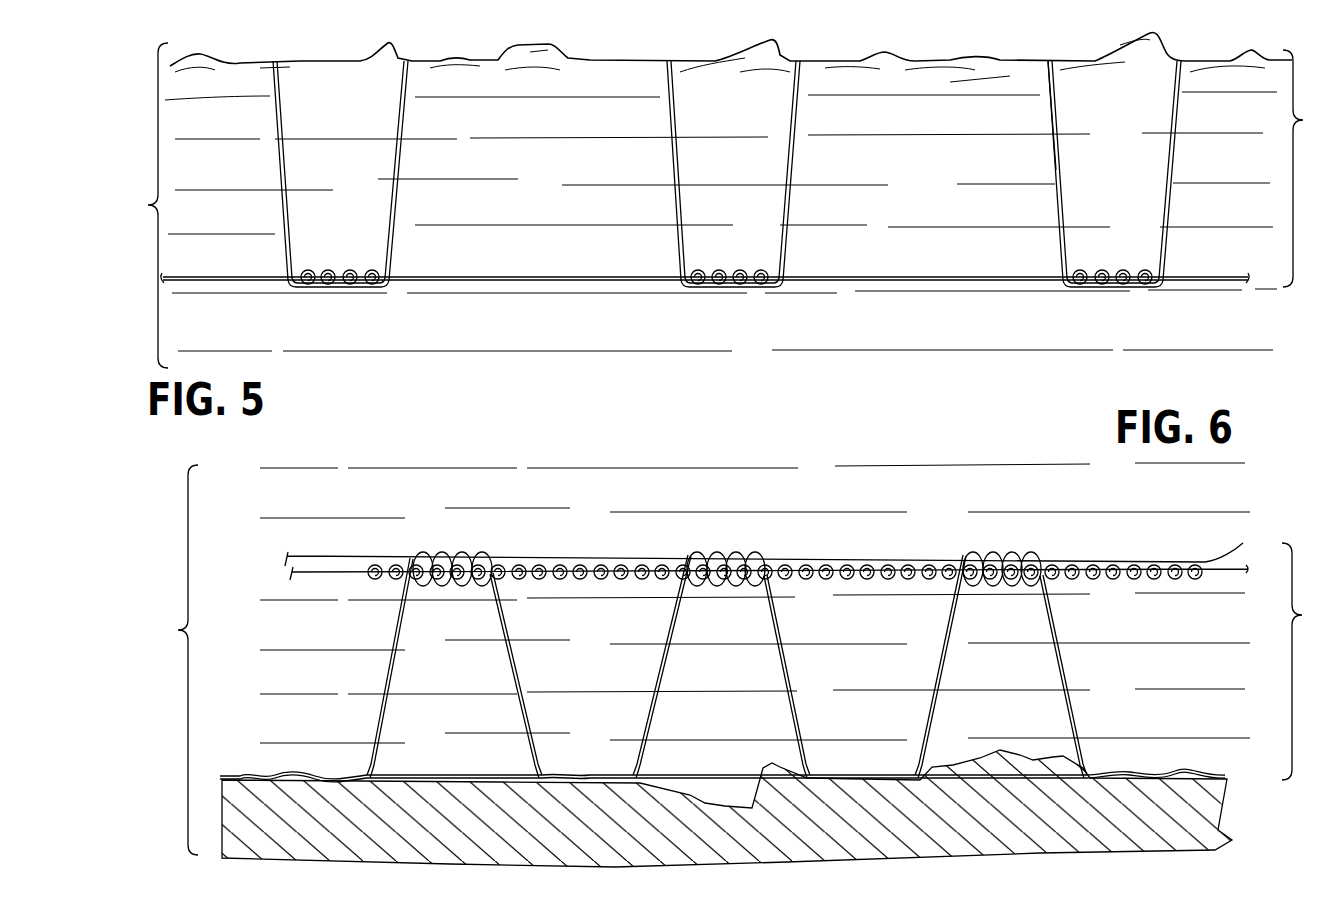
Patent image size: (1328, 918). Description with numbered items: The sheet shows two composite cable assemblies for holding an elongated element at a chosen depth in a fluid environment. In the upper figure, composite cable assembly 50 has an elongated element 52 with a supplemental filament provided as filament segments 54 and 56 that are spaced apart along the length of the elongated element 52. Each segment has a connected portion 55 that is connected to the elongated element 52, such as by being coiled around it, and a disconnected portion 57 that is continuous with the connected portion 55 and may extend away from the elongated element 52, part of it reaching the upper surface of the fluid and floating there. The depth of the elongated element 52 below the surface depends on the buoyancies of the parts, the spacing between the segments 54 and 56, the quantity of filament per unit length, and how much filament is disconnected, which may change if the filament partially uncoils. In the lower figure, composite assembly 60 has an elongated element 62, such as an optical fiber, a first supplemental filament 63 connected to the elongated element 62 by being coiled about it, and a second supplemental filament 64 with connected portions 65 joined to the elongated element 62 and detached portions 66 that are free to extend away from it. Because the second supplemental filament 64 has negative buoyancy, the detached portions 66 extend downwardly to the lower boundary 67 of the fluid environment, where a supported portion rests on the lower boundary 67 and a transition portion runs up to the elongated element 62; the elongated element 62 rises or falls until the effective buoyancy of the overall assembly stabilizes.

In FIG. 5, the composite cable assembly 50 is at (735, 205).
In FIG. 5, the elongated element 52 is at (888, 281).
In FIG. 5, the filament segment 54 is at (1060, 172).
In FIG. 5, the connected portion 55 is at (1077, 287).
In FIG. 5, the filament segment 56 is at (797, 173).
In FIG. 5, the disconnected portion 57 is at (1055, 123).
In FIG. 6, the composite assembly 60 is at (750, 660).
In FIG. 6, the elongated element 62 is at (1233, 572).
In FIG. 6, the first supplemental filament 63 is at (1105, 557).
In FIG. 6, the second supplemental filament 64 is at (1066, 670).
In FIG. 6, the connected portions 65 is at (1044, 553).
In FIG. 6, the detached portions 66 is at (1088, 757).
In FIG. 6, the lower boundary 67 is at (1015, 758).